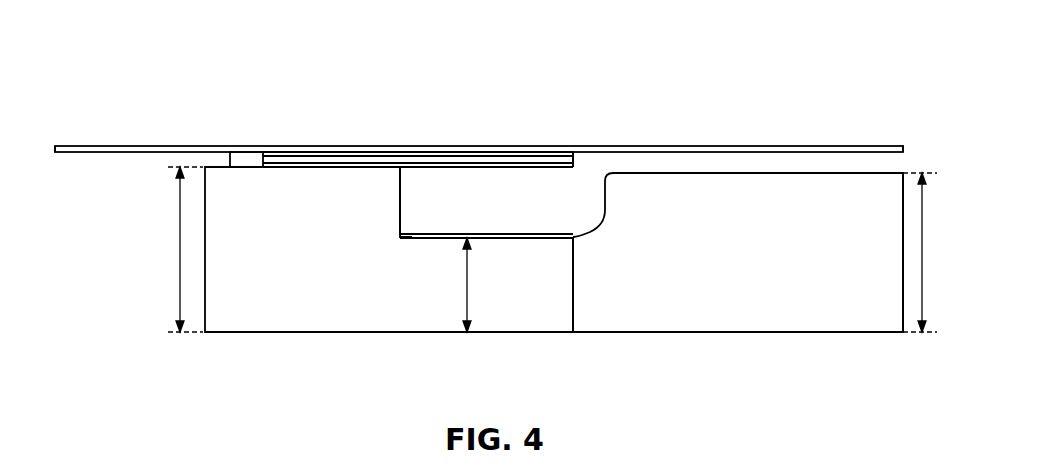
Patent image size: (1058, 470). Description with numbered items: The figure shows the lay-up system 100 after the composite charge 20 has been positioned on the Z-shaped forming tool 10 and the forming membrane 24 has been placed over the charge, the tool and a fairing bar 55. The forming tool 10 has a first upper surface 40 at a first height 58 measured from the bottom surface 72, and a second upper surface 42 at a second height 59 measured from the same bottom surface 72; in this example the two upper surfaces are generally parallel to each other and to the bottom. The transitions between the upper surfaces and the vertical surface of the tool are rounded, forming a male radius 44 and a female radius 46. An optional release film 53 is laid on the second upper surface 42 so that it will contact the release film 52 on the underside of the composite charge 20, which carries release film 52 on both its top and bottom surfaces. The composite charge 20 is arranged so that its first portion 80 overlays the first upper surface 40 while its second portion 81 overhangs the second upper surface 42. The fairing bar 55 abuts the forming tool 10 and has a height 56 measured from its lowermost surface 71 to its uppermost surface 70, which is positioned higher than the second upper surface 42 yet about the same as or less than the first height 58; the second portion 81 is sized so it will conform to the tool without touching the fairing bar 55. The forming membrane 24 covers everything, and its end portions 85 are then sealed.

The lay-up system 100 is at (731, 57).
The forming tool 10 is at (352, 312).
The composite charge 20 is at (562, 155).
The forming membrane 24 is at (125, 146).
The first upper surface 40 is at (234, 166).
The second upper surface 42 is at (500, 240).
The male radius 44 is at (399, 170).
The female radius 46 is at (402, 233).
The release film 52 is at (485, 150).
The release film 53 is at (515, 233).
The fairing bar 55 is at (690, 278).
The height of the fairing bar 56 is at (934, 252).
The first height 58 is at (180, 253).
The second height 59 is at (465, 275).
The uppermost surface 70 is at (738, 172).
The lowermost surface 71 is at (636, 335).
The bottom surface 72 is at (403, 335).
The first portion 80 is at (318, 158).
The second portion 81 is at (458, 158).
The end portions 85 is at (68, 146).